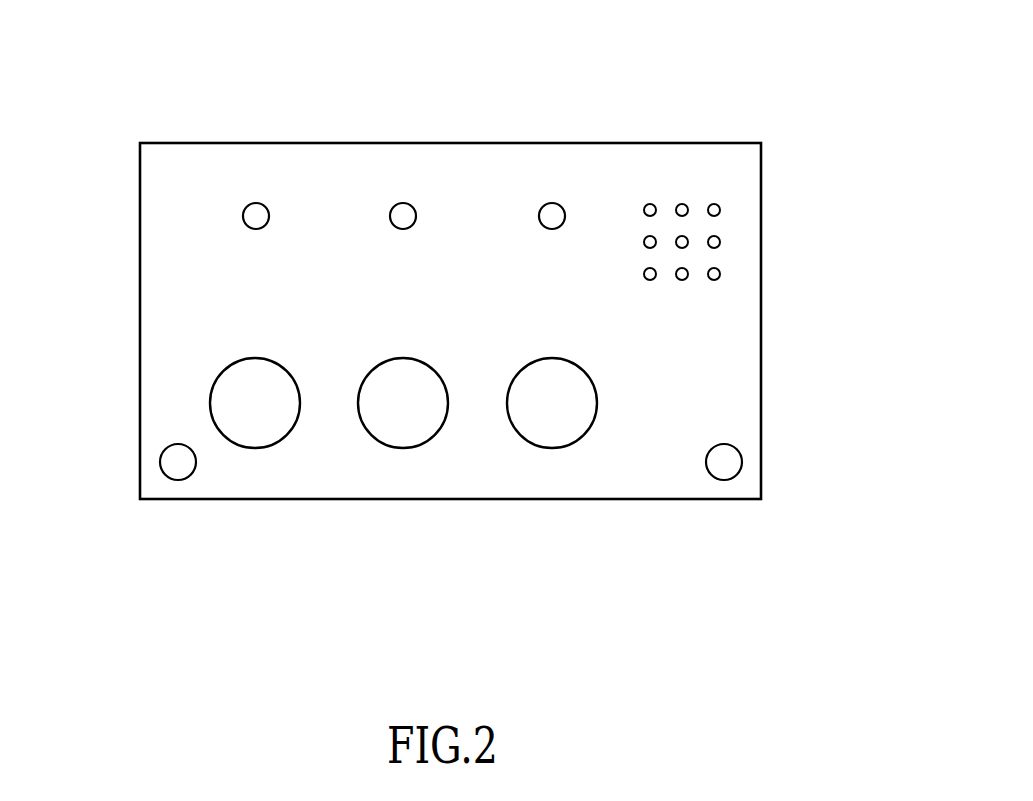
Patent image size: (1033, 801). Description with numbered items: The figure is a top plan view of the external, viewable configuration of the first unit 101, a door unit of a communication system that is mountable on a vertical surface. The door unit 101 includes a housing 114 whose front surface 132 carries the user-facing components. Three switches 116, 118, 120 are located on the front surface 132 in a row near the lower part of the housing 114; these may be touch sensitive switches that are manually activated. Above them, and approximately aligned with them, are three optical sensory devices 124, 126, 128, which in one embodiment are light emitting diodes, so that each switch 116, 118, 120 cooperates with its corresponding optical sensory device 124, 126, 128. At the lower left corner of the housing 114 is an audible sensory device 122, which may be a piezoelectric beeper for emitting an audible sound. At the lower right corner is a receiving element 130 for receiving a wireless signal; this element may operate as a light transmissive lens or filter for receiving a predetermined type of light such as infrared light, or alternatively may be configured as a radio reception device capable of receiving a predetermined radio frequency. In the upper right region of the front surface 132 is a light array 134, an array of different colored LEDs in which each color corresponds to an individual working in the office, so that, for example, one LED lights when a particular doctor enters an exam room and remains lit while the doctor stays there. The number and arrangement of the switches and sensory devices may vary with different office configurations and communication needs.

The first unit 101 is at (746, 72).
The housing 114 is at (762, 313).
The switch 116 is at (253, 448).
The switch 118 is at (398, 448).
The switch 120 is at (547, 448).
The audible sensory device 122 is at (165, 449).
The optical sensory device 124 is at (256, 203).
The optical sensory device 126 is at (403, 203).
The optical sensory device 128 is at (552, 203).
The receiving element 130 is at (737, 449).
The front surface 132 is at (438, 306).
The light array 134 is at (682, 203).